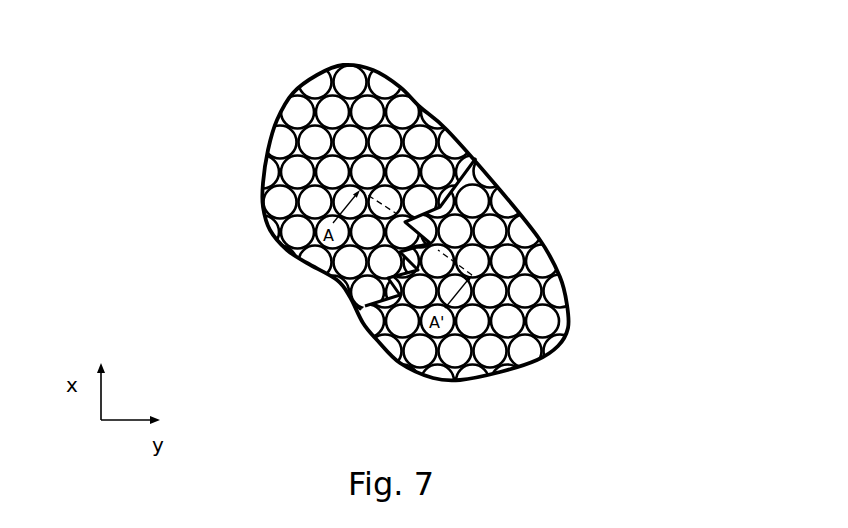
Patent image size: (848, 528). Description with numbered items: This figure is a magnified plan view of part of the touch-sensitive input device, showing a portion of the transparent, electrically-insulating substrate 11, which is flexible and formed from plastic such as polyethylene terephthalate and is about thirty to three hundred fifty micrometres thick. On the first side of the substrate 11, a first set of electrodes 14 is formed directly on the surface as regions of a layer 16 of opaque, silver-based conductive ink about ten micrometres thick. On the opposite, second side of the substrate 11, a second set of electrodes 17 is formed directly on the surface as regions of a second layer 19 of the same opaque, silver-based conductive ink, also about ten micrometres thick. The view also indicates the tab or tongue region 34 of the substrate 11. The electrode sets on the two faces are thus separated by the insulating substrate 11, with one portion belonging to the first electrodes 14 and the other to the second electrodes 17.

The tab region 34 is at (284, 101).
The layer of opaque, silver-based conductive ink 16 is at (276, 125).
The first set of electrodes 14 is at (481, 136).
The second set of electrodes 17 is at (628, 266).
The substrate 11 is at (368, 315).
The layer of opaque, silver-based conductive ink 19 is at (571, 327).